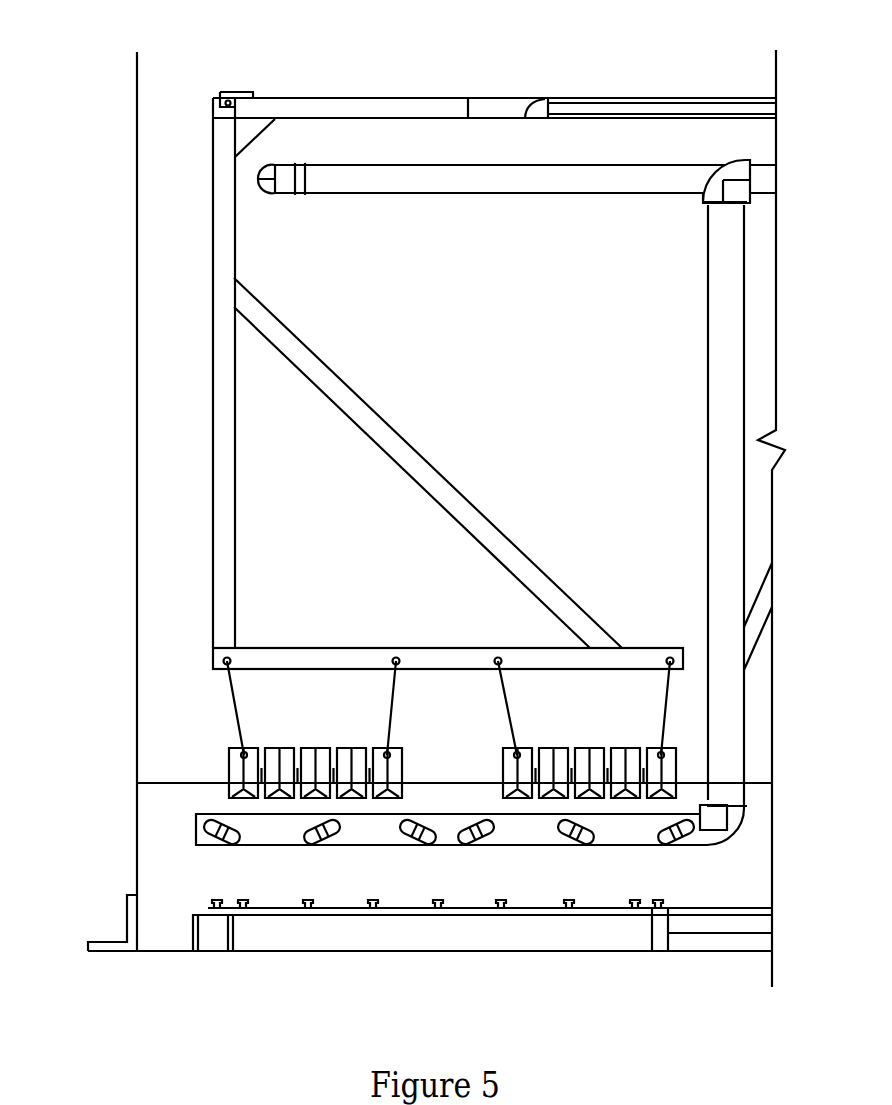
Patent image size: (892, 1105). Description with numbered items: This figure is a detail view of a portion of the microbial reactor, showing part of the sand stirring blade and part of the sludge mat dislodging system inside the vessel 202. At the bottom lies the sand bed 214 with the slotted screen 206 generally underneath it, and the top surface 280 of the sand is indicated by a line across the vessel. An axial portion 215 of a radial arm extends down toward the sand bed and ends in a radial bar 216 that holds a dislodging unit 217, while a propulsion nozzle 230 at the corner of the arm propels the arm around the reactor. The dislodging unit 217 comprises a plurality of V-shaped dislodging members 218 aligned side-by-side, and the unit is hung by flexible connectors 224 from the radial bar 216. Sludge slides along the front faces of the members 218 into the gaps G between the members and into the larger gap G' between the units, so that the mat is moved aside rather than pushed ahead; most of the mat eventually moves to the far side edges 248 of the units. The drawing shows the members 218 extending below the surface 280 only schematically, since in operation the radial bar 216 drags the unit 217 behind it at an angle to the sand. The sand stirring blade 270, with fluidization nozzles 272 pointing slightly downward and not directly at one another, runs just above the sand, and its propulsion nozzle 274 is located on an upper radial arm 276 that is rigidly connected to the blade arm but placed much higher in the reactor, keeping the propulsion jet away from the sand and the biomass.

The vessel 202 is at (137, 276).
The slotted screen 206 is at (410, 905).
The sand bed 214 is at (583, 888).
The axial portion 215 is at (227, 392).
The radial bar 216 is at (284, 647).
The dislodging unit 217 is at (546, 695).
The V-shaped dislodging member 218 is at (347, 755).
The flexible connector 224 is at (232, 695).
The propulsion nozzle 230 is at (220, 92).
The far side edge 248 is at (229, 760).
The stirring blade 270 is at (448, 832).
The fluidization nozzle 272 is at (213, 842).
The propulsion nozzle 274 is at (267, 193).
The upper radial arm 276 is at (448, 193).
The top surface of the sand 280 is at (170, 783).
The gap G is at (337, 835).
The gap G' is at (503, 828).